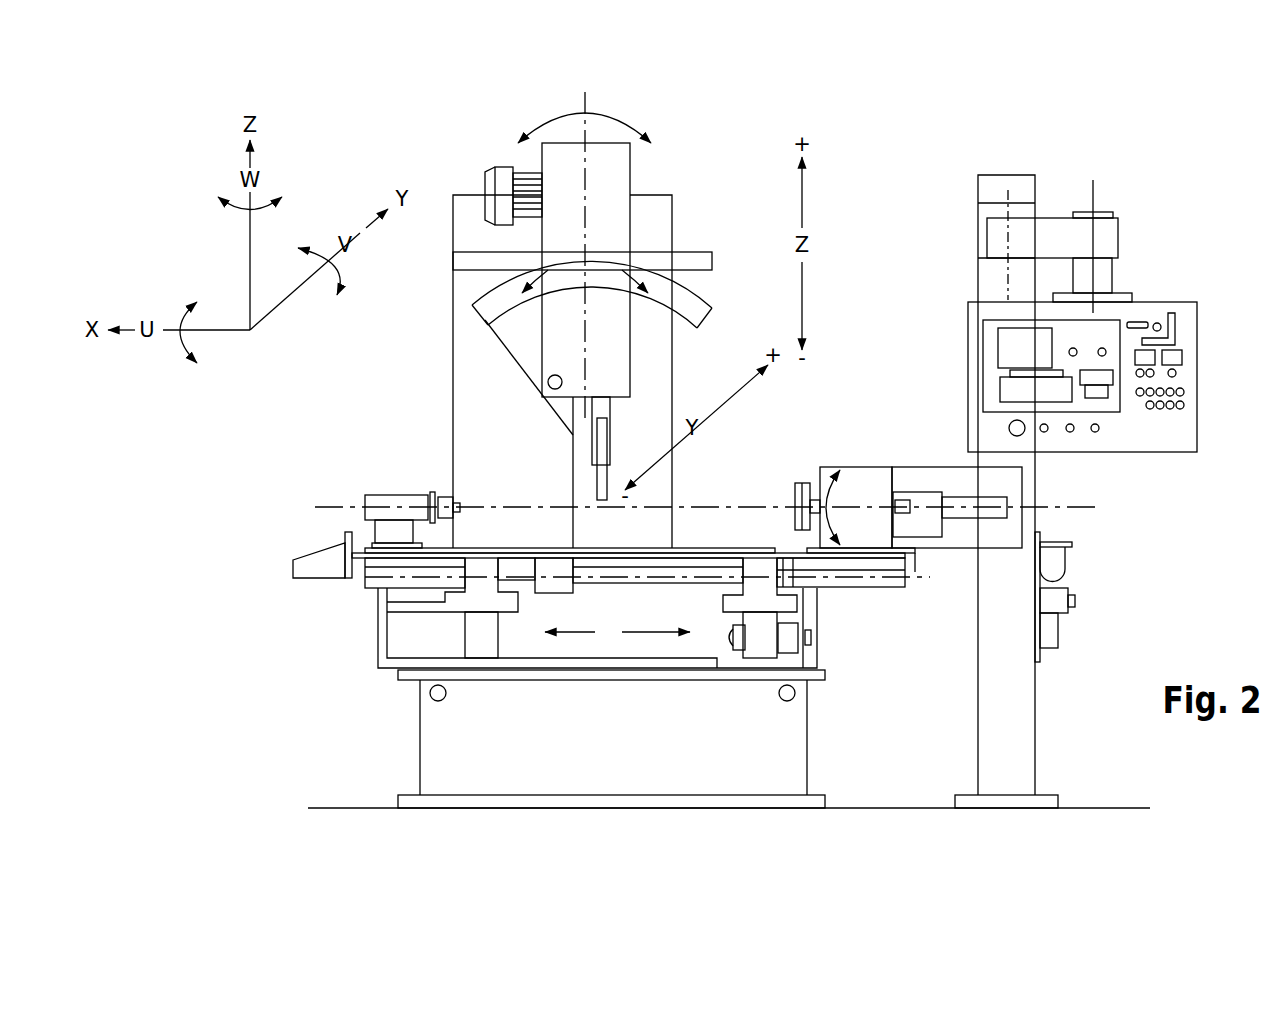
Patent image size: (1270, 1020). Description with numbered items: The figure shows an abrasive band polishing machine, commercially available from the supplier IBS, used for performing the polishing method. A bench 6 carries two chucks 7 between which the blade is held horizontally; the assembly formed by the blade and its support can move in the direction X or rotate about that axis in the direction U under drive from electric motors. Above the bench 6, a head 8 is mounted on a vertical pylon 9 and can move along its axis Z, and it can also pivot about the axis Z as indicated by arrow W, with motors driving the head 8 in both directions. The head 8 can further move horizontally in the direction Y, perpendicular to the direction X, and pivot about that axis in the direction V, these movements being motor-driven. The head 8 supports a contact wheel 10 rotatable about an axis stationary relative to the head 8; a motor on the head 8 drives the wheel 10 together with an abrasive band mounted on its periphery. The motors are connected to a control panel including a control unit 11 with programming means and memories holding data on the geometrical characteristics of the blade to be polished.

The bench 6 is at (832, 597).
The chucks 7 is at (386, 491).
The head 8 is at (553, 338).
The vertical pylon 9 is at (662, 234).
The contact wheel 10 is at (584, 483).
The control unit 11 is at (1220, 280).